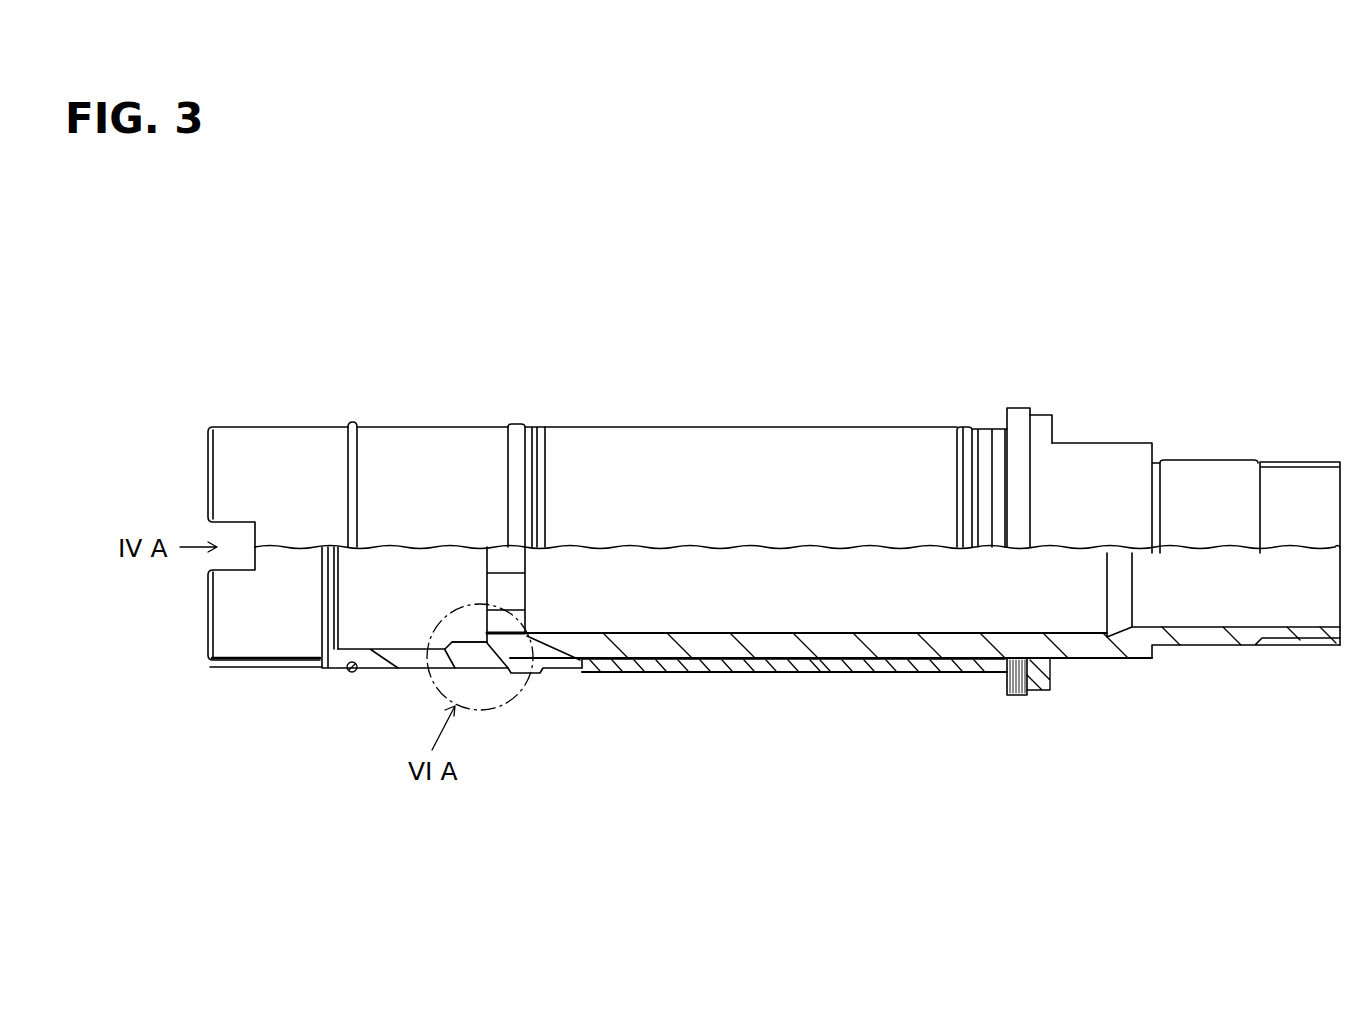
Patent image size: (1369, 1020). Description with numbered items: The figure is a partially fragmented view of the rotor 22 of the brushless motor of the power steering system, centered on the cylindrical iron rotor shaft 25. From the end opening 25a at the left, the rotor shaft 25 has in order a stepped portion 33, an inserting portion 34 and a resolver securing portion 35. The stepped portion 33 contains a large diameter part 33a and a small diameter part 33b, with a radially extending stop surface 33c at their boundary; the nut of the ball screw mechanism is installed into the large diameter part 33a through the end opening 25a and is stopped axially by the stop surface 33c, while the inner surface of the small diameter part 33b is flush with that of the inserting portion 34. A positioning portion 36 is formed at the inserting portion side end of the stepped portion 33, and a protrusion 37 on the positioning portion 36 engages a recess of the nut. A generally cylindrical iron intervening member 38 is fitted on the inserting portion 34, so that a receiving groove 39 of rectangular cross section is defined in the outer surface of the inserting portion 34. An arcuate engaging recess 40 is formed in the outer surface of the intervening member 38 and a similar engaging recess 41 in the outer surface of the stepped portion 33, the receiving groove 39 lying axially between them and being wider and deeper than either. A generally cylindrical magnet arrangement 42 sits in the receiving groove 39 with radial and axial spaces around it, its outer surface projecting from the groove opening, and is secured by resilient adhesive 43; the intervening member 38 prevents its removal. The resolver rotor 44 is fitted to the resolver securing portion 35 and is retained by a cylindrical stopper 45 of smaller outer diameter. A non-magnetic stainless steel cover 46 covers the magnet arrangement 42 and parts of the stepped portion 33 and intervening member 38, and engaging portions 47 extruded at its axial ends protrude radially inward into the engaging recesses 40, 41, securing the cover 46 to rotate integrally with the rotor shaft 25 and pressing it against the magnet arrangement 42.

The rotor 22 is at (1166, 347).
The rotor shaft 25 is at (433, 437).
The end opening 25a is at (208, 618).
The stepped portion 33 is at (403, 670).
The large diameter part 33a is at (382, 648).
The small diameter part 33b is at (533, 630).
The stop surface 33c is at (473, 633).
The inserting portion 34 is at (780, 635).
The resolver securing portion 35 is at (1100, 660).
The positioning portion 36 is at (490, 563).
The protrusion 37 is at (440, 636).
The intervening member 38 is at (985, 658).
The receiving groove 39 is at (660, 673).
The engaging recess 40 is at (972, 676).
The engaging recess 41 is at (532, 674).
The magnet arrangement 42 is at (757, 675).
The adhesive 43 is at (800, 676).
The resolver rotor 44 is at (1018, 410).
The stopper 45 is at (1042, 418).
The cover 46 is at (845, 437).
The engaging portions 47 is at (529, 427).